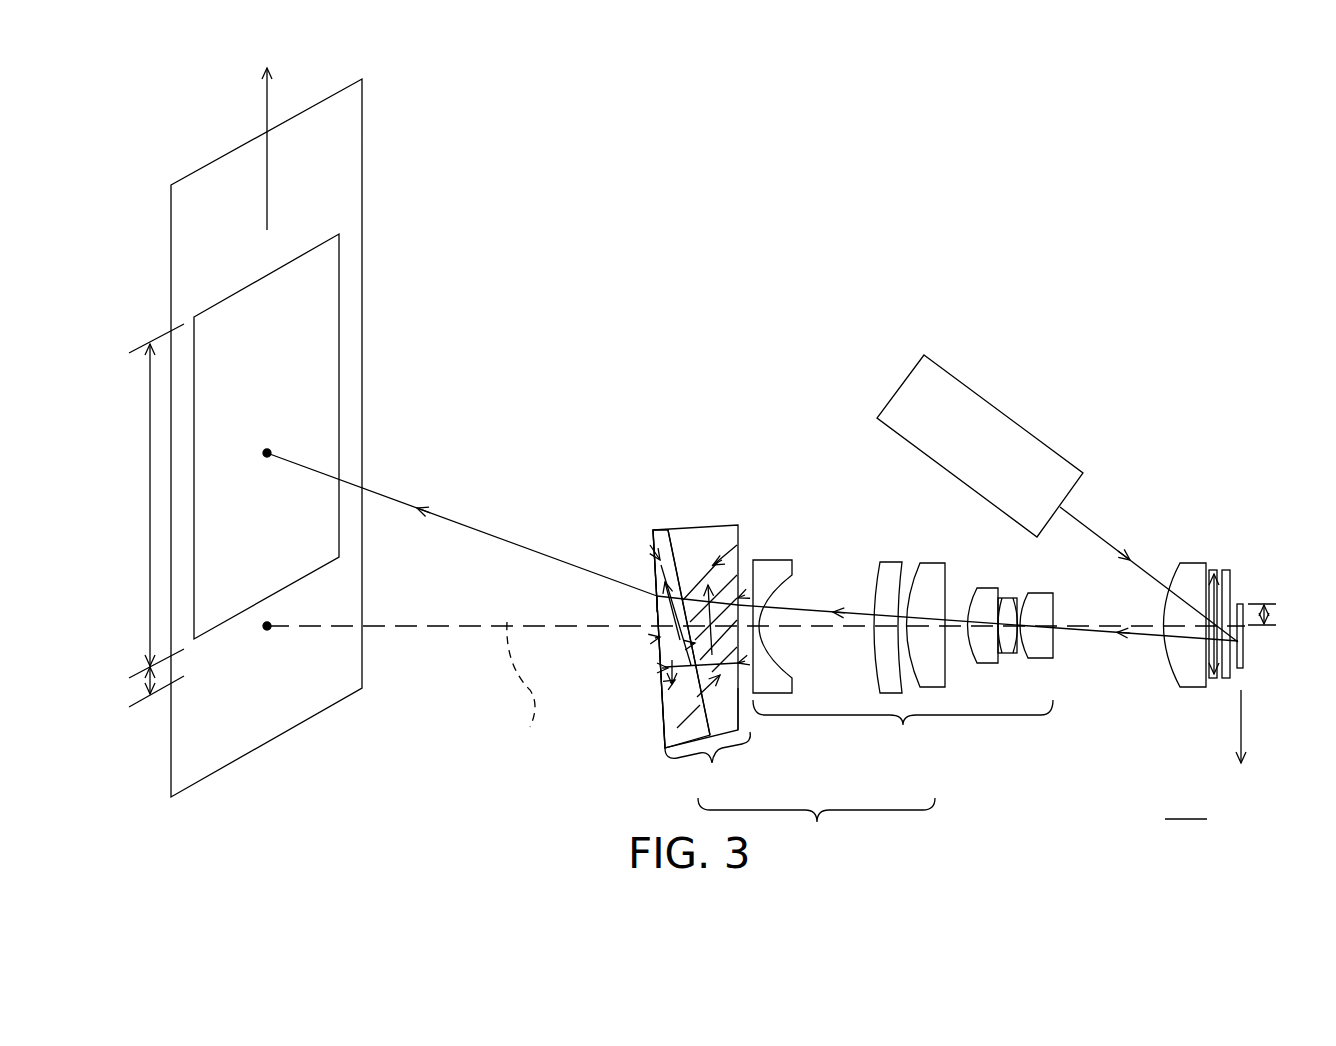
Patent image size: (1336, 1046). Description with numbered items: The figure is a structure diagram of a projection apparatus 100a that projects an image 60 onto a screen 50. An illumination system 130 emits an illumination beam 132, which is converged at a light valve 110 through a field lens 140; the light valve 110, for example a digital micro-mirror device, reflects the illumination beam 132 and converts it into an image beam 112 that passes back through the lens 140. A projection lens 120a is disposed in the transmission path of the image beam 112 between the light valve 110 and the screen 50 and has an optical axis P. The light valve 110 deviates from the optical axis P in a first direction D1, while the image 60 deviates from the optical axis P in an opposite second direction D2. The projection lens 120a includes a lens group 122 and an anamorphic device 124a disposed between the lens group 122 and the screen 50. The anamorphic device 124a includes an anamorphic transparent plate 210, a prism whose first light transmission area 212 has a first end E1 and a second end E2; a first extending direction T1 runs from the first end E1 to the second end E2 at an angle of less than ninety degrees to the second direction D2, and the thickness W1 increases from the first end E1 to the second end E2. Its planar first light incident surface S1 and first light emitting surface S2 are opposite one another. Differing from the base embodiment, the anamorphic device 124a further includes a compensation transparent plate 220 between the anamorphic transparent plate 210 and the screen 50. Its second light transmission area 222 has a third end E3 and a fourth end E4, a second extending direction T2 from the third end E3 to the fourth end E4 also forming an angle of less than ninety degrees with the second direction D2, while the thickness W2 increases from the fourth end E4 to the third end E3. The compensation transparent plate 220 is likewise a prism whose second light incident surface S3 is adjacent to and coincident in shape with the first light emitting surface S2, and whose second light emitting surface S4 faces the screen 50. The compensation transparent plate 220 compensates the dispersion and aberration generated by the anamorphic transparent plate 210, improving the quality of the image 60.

The screen 50 is at (203, 200).
The image 60 is at (323, 273).
The second direction D2 is at (268, 97).
The optical axis P is at (521, 692).
The anamorphic transparent plate 210 is at (710, 538).
The compensation transparent plate 220 is at (680, 730).
The first light transmission area 212 is at (687, 563).
The second light transmission area 222 is at (653, 570).
The fourth end E4 is at (650, 545).
The second end E2 is at (722, 560).
The first light incident surface S1 is at (738, 598).
The first extending direction T1 is at (745, 606).
The second extending direction T2 is at (657, 612).
The second light emitting surface S4 is at (655, 638).
The first light emitting surface S2 is at (690, 644).
The second light incident surface S3 is at (745, 661).
The thickness of the second light transmission area W2 is at (662, 668).
The third end E3 is at (670, 683).
The first end E1 is at (677, 728).
The thickness of the first light transmission area W1 is at (738, 688).
The anamorphic device 124a is at (707, 768).
The projection lens 120a is at (816, 828).
The lens group 122 is at (903, 675).
The illumination system 130 is at (1003, 412).
The illumination beam 132 is at (1123, 557).
The image beam 112 is at (1142, 637).
The field lens 140 is at (1195, 560).
The light valve 110 is at (1247, 655).
The first direction D1 is at (1260, 726).
The projection apparatus 100a is at (1186, 806).